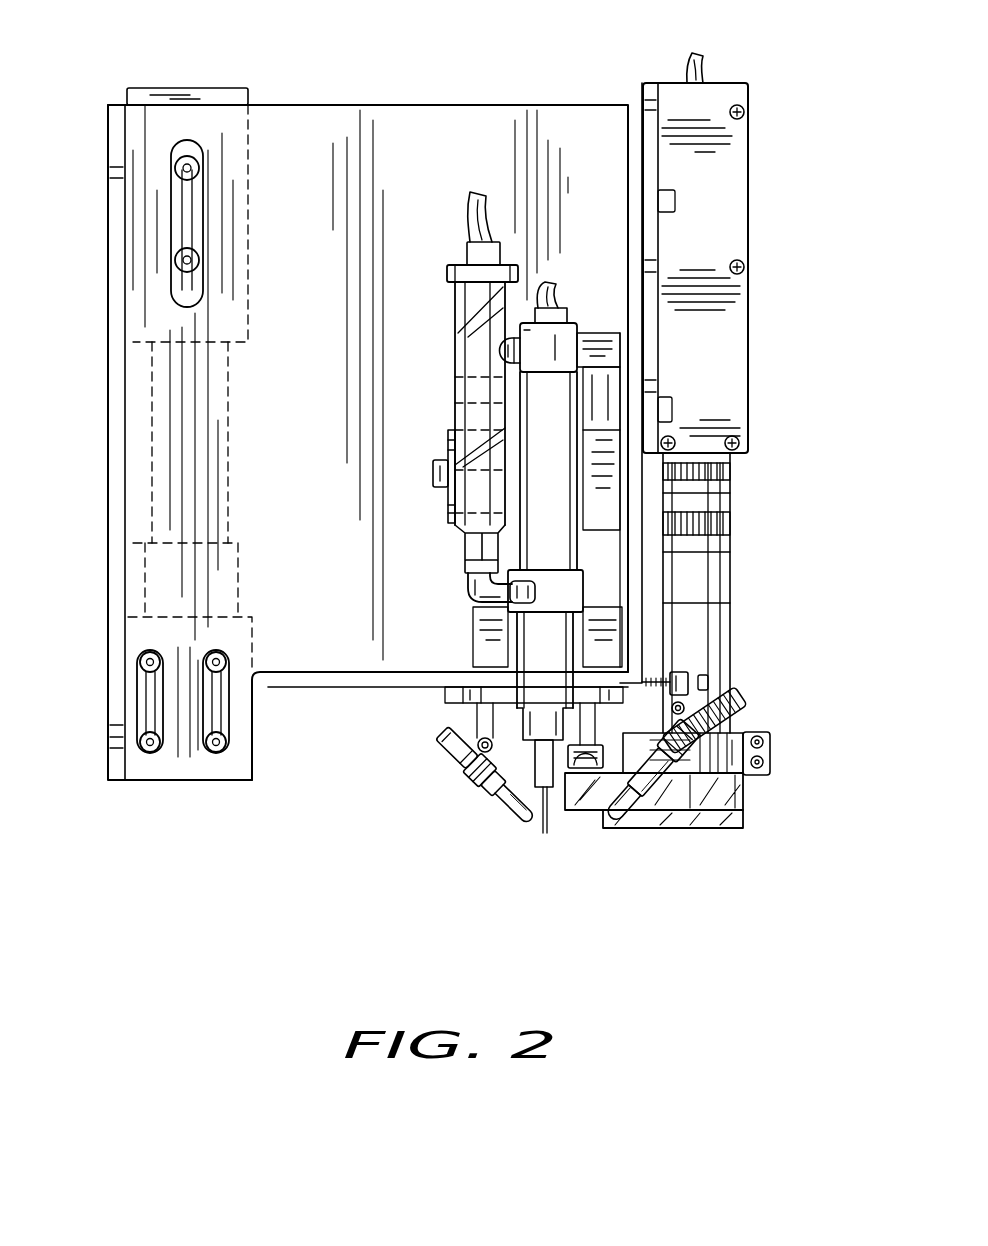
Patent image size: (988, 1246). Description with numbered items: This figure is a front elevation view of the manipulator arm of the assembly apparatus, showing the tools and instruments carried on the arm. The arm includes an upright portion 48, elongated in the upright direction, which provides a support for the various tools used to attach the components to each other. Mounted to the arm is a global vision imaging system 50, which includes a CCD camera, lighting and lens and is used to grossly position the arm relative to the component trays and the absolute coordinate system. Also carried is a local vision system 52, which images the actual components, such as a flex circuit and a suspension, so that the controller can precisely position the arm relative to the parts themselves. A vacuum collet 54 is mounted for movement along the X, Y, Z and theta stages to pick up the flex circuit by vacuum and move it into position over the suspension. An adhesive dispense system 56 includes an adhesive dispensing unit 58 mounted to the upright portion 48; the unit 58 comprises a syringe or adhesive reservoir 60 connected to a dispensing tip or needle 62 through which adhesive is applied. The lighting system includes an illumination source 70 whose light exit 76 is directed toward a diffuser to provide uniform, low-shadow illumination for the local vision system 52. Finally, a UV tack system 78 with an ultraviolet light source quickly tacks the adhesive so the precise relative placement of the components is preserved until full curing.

The upright portion 48 is at (442, 105).
The global vision imaging system 50 is at (146, 78).
The local vision system 52 is at (748, 218).
The vacuum collet 54 is at (610, 766).
The adhesive dispense system 56 is at (440, 306).
The adhesive dispensing unit 58 is at (438, 503).
The adhesive reservoir 60 is at (462, 558).
The dispensing needle 62 is at (540, 830).
The illumination source 70 is at (653, 787).
The light exit 76 is at (614, 817).
The UV tack system 78 is at (503, 800).